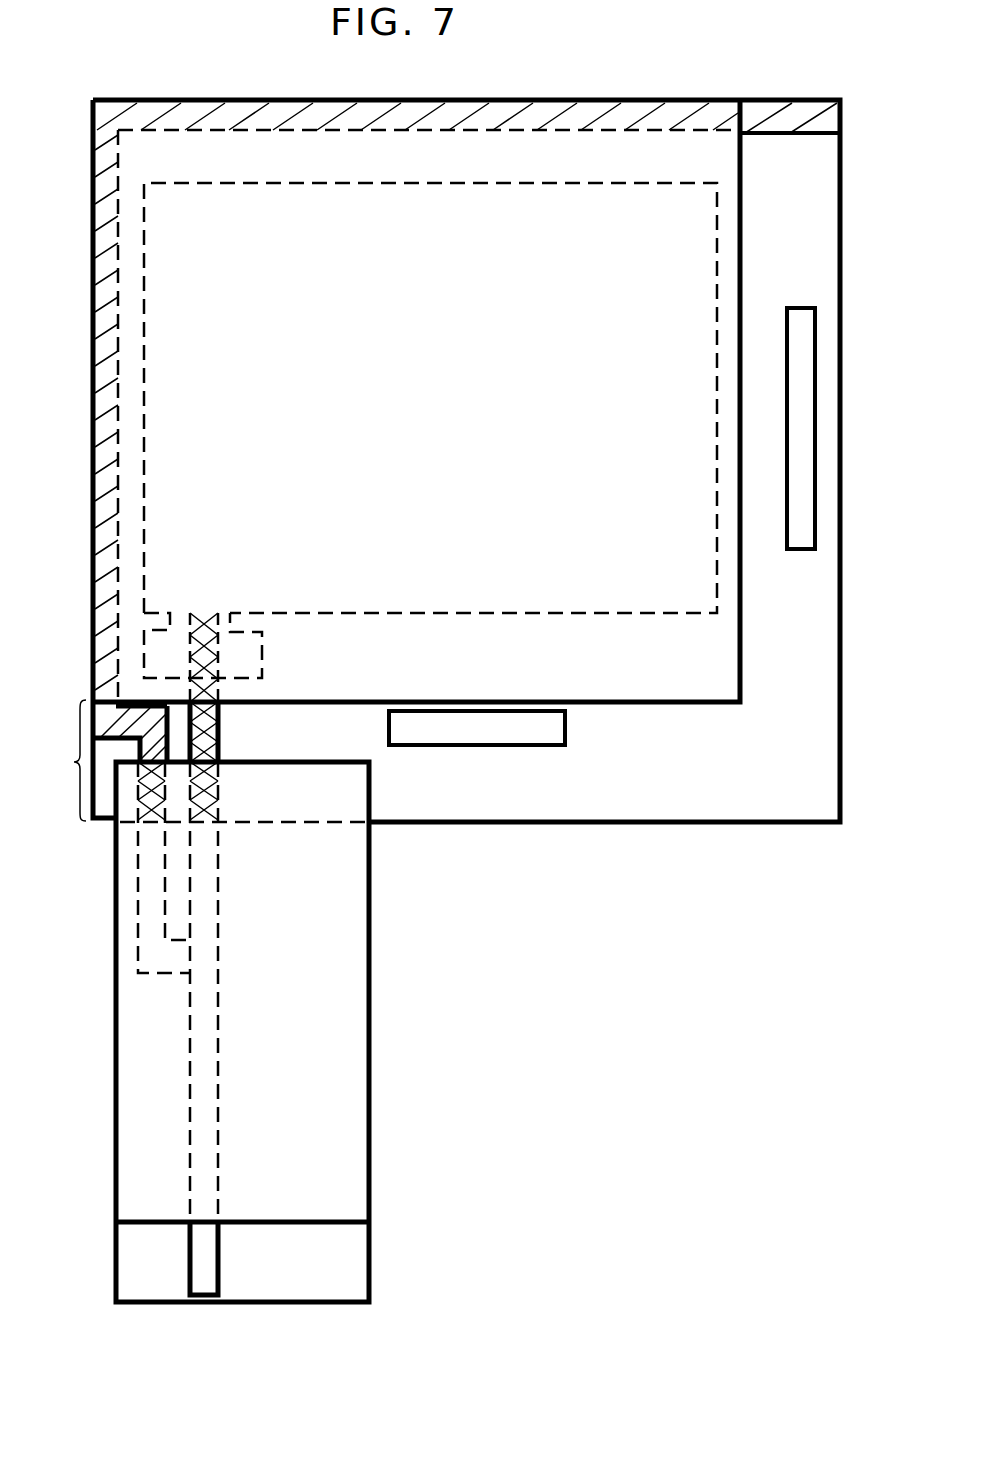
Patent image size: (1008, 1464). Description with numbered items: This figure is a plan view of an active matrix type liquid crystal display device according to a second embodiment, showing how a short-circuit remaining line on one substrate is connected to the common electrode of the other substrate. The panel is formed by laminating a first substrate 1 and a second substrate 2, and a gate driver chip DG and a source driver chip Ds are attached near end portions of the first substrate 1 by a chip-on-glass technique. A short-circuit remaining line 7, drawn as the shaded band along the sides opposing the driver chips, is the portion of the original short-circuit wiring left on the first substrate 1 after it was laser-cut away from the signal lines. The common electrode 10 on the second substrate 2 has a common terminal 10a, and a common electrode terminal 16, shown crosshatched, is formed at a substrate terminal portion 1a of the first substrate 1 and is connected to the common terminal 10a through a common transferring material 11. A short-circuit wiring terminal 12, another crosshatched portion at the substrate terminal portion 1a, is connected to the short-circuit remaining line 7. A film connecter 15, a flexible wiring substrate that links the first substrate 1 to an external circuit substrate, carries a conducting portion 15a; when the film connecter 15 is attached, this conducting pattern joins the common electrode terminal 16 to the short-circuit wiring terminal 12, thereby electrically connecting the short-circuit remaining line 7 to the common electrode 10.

The first substrate 1 is at (840, 695).
The substrate terminal portion 1a is at (105, 760).
The second substrate 2 is at (742, 625).
The short-circuit remaining line 7 is at (668, 105).
The common electrode 10 is at (742, 272).
The common terminal 10a is at (262, 655).
The common transferring material 11 is at (222, 612).
The short-circuit wiring terminal 12 is at (126, 830).
The film connecter 15 is at (370, 1040).
The conducting portion 15a is at (138, 886).
The common electrode terminal 16 is at (220, 733).
The gate driver chip DG is at (812, 390).
The source driver chip Ds is at (472, 745).